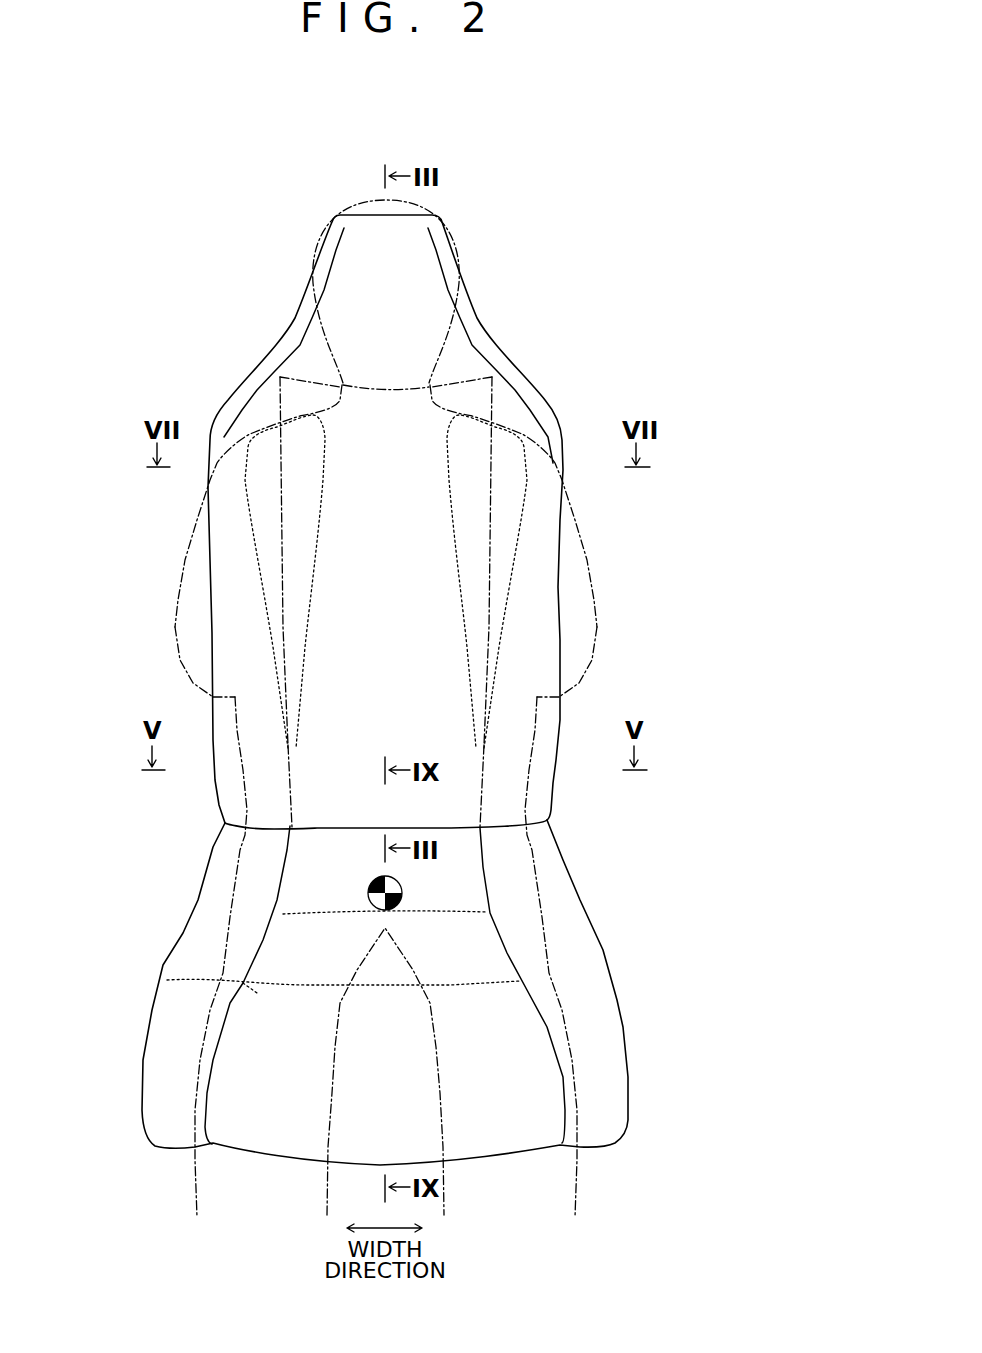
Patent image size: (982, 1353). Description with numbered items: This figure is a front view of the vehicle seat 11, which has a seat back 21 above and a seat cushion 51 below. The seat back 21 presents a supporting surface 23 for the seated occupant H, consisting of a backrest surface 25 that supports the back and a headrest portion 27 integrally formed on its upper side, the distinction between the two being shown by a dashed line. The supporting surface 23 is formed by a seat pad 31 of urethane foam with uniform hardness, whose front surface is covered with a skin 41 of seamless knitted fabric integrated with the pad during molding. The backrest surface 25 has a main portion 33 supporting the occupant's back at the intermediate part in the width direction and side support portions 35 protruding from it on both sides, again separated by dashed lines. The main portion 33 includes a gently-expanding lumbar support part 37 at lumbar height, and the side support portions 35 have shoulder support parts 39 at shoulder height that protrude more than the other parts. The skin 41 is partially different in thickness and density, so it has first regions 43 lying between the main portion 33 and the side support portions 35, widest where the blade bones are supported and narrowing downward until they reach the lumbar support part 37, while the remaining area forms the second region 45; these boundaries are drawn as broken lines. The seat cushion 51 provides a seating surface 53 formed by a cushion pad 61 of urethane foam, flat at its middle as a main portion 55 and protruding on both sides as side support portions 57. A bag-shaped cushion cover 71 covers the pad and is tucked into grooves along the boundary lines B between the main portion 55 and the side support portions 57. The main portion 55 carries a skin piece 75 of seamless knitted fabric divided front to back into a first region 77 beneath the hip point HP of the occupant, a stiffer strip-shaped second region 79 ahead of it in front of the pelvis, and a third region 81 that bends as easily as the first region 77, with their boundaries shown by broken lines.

The vehicle seat 11 is at (536, 337).
The seat back 21 is at (232, 533).
The supporting surface 23 is at (221, 566).
The backrest surface 25 is at (440, 596).
The headrest portion 27 is at (440, 311).
The seat pad 31 is at (535, 550).
The main portion 33 is at (430, 465).
The side support portions 35 is at (232, 607).
The lumbar support part 37 is at (432, 750).
The shoulder support parts 39 is at (222, 447).
The skin 41 is at (243, 650).
The first regions 43 is at (268, 492).
The second region 45 is at (417, 692).
The seat cushion 51 is at (223, 1087).
The seating surface 53 is at (247, 1029).
The main portion 55 is at (523, 1023).
The side support portions 57 is at (160, 1057).
The cushion pad 61 is at (167, 980).
The cushion cover 71 is at (255, 908).
The skin piece 75 is at (310, 867).
The first region 77 is at (462, 893).
The second region 79 is at (490, 943).
The third region 81 is at (547, 1103).
The boundary lines B is at (263, 947).
The seated occupant H is at (237, 709).
The hip point HP is at (402, 892).